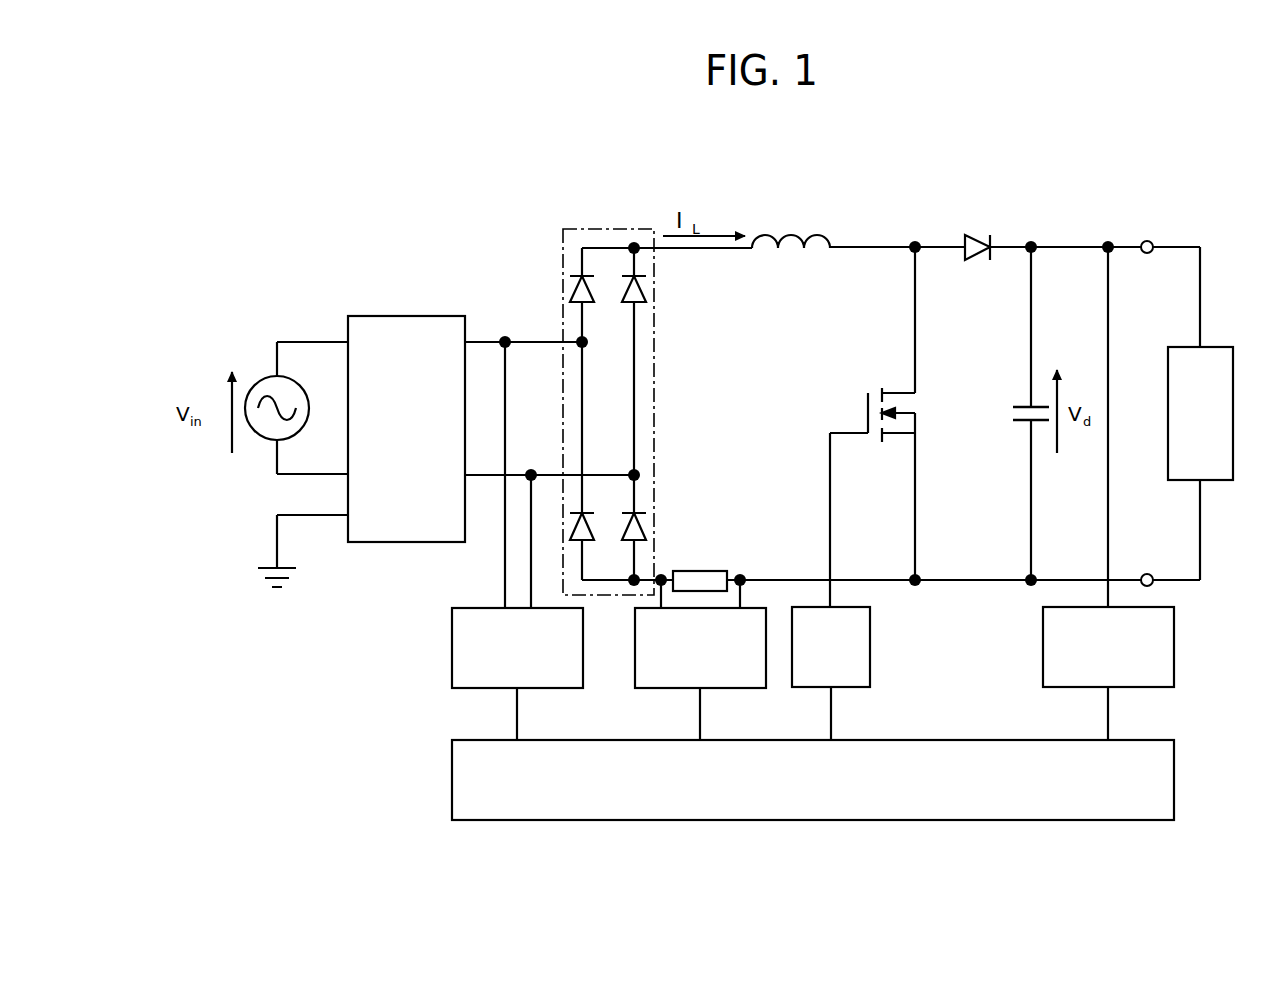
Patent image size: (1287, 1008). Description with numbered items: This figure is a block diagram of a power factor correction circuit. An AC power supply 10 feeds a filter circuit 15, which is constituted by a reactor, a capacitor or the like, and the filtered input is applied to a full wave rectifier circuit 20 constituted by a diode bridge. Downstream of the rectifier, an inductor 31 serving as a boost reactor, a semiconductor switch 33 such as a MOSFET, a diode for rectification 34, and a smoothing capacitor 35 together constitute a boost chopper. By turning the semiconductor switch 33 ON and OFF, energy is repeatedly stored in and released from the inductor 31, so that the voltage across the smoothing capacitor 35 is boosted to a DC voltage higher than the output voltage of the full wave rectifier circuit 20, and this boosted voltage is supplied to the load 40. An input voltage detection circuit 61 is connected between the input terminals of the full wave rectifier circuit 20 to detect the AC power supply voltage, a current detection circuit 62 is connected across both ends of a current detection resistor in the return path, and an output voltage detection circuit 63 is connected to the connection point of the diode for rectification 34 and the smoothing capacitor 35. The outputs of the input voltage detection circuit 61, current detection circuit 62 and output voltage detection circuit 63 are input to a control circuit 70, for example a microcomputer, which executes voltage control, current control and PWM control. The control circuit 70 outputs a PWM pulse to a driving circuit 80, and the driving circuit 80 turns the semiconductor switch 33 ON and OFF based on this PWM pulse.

The AC power supply 10 is at (262, 378).
The filter circuit 15 is at (393, 328).
The full wave rectifier circuit 20 is at (563, 232).
The inductor 31 is at (787, 228).
The semiconductor switch 33 is at (856, 413).
The diode for rectification 34 is at (977, 226).
The smoothing capacitor 35 is at (1010, 415).
The load 40 is at (1215, 355).
The input voltage detection circuit 61 is at (452, 653).
The current detection circuit 62 is at (636, 660).
The output voltage detection circuit 63 is at (1047, 665).
The control circuit 70 is at (465, 778).
The driving circuit 80 is at (872, 643).